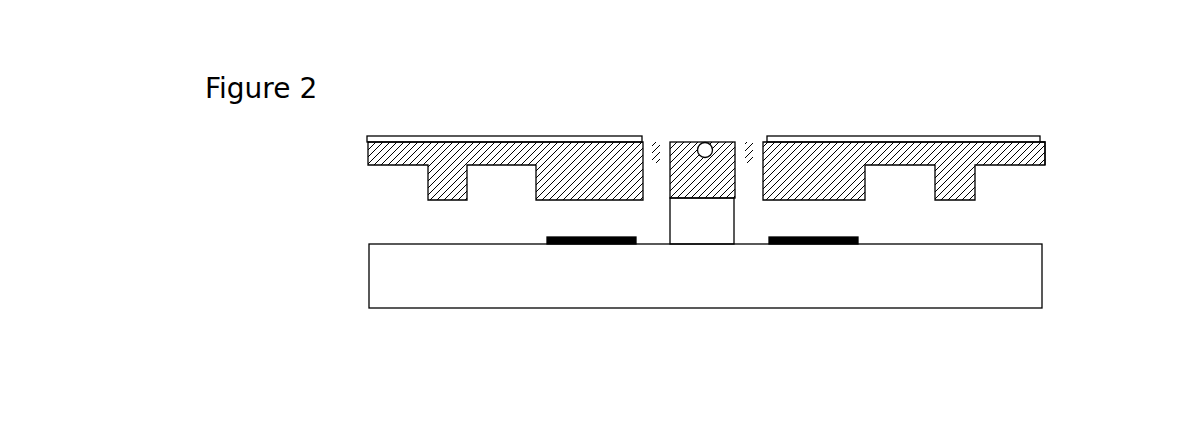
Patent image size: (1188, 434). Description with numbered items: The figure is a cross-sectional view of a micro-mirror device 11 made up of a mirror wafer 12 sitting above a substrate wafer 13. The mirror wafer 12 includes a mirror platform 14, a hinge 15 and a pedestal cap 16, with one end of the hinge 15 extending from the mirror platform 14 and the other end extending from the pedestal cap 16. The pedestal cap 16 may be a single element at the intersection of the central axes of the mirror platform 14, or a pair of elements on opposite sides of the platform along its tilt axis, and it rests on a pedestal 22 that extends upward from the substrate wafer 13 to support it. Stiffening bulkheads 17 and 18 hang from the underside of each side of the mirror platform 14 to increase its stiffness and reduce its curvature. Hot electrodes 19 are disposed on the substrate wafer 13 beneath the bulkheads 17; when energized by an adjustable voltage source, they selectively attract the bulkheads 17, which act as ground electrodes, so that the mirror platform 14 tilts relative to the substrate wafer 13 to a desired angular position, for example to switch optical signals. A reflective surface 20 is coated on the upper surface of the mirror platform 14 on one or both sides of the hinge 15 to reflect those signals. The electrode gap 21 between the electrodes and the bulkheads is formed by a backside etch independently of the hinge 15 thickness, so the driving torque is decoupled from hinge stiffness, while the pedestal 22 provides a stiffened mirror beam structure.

The micro-mirror device 11 is at (932, 70).
The mirror wafer 12 is at (365, 175).
The substrate wafer 13 is at (367, 253).
The mirror platform 14 is at (1045, 154).
The hinge 15 is at (707, 143).
The pedestal cap 16 is at (729, 141).
The stiffening bulkhead 17 is at (536, 190).
The stiffening bulkhead 18 is at (428, 192).
The hot electrode 19 is at (547, 238).
The reflective surface 20 is at (495, 138).
The electrode gap 21 is at (702, 226).
The pedestal 22 is at (717, 236).